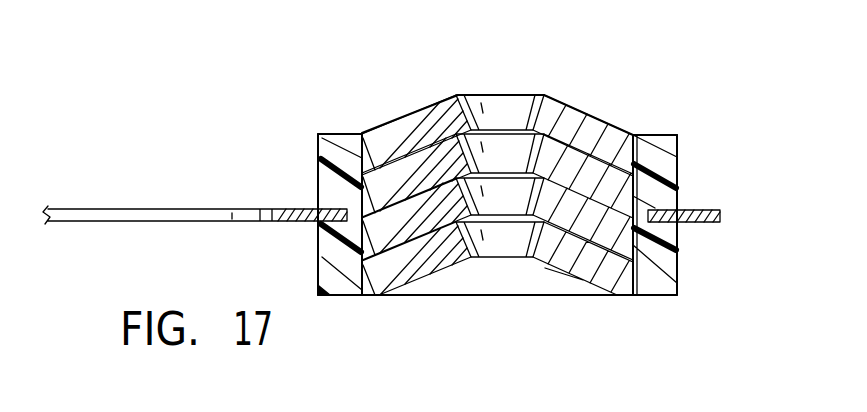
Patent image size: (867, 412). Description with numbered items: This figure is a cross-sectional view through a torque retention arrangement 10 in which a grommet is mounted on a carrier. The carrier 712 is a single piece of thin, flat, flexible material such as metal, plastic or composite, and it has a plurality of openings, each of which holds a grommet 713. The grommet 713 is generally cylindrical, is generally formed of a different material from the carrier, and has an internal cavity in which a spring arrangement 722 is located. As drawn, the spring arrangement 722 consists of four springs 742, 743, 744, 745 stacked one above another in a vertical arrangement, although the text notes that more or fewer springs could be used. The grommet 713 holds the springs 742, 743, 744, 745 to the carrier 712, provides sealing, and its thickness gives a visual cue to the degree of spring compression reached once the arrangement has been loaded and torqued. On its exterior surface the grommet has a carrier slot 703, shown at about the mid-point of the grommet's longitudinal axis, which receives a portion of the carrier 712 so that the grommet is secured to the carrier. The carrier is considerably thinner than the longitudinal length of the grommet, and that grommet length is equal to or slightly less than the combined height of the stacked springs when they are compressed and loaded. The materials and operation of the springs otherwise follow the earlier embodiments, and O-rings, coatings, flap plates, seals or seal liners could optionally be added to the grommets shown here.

The inductor assembly 10 is at (652, 74).
The carrier slot 703 is at (320, 240).
The carrier 712 is at (186, 200).
The grommet 713 is at (330, 133).
The spring arrangement 722 is at (432, 93).
The spring 742 is at (583, 116).
The spring 743 is at (656, 182).
The spring 744 is at (613, 237).
The spring 745 is at (585, 262).